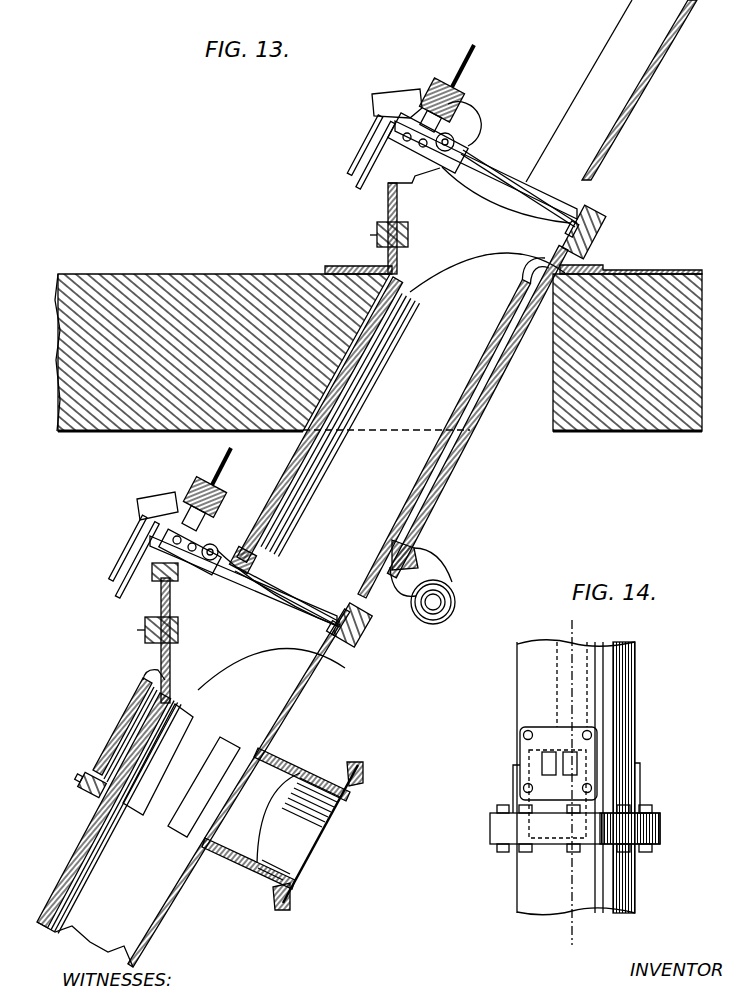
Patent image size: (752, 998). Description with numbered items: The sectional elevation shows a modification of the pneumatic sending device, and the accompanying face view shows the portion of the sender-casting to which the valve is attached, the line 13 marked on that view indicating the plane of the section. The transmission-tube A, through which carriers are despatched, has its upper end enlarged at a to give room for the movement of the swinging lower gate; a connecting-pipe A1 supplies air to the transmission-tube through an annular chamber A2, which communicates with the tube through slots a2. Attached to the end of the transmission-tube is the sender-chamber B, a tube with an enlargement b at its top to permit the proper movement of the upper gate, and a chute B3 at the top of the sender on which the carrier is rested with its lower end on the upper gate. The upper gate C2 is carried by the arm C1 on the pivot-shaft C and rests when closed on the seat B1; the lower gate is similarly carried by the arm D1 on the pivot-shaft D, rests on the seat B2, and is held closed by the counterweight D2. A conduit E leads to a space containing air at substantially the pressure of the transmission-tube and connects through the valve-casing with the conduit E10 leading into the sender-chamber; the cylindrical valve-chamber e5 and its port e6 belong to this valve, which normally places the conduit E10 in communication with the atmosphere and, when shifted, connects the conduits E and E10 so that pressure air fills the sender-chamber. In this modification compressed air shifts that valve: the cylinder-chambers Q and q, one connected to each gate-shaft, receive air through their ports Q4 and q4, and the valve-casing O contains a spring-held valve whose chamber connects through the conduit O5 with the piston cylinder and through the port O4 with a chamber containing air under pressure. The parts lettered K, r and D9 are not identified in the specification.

In FIG. 13, the sender-chamber B is at (398, 411).
In FIG. 14, the sender-chamber B is at (517, 703).
In FIG. 13, the conduit E10 is at (440, 462).
In FIG. 14, the conduit E10 is at (567, 655).
In FIG. 13, the port e6 is at (445, 582).
In FIG. 13, the cylindrical valve-chamber e5 is at (446, 602).
In FIG. 13, the chute B3 is at (611, 91).
In FIG. 13, the seat B1 is at (571, 214).
In FIG. 13, the seat B2 is at (345, 612).
In FIG. 13, the enlargement b is at (405, 221).
In FIG. 13, the pivot-shaft C is at (466, 137).
In FIG. 13, the valve block K is at (428, 143).
In FIG. 13, the cylinder-chamber Q is at (464, 97).
In FIG. 13, the port Q4 is at (478, 66).
In FIG. 13, the arm C1 is at (472, 205).
In FIG. 13, the upper gate C2 is at (508, 172).
In FIG. 13, the valve-casing O is at (395, 95).
In FIG. 13, the conduit O5 is at (356, 152).
In FIG. 13, the port O4 is at (359, 198).
In FIG. 13, the pivot-shaft D is at (243, 572).
In FIG. 13, the valve block r is at (190, 546).
In FIG. 13, the cylinder-chamber q is at (227, 495).
In FIG. 13, the port q4 is at (220, 463).
In FIG. 13, the bracket D9 is at (165, 568).
In FIG. 13, the arm D1 is at (260, 590).
In FIG. 13, the counterweight D2 is at (312, 600).
In FIG. 13, the enlargement a is at (241, 640).
In FIG. 13, the transmission-tube A is at (130, 905).
In FIG. 13, the connecting-pipe A1 is at (282, 829).
In FIG. 13, the annular chamber A2 is at (108, 730).
In FIG. 13, the slots a2 is at (181, 770).
In FIG. 14, the section line 13 is at (561, 787).
In FIG. 14, the conduit E is at (535, 786).